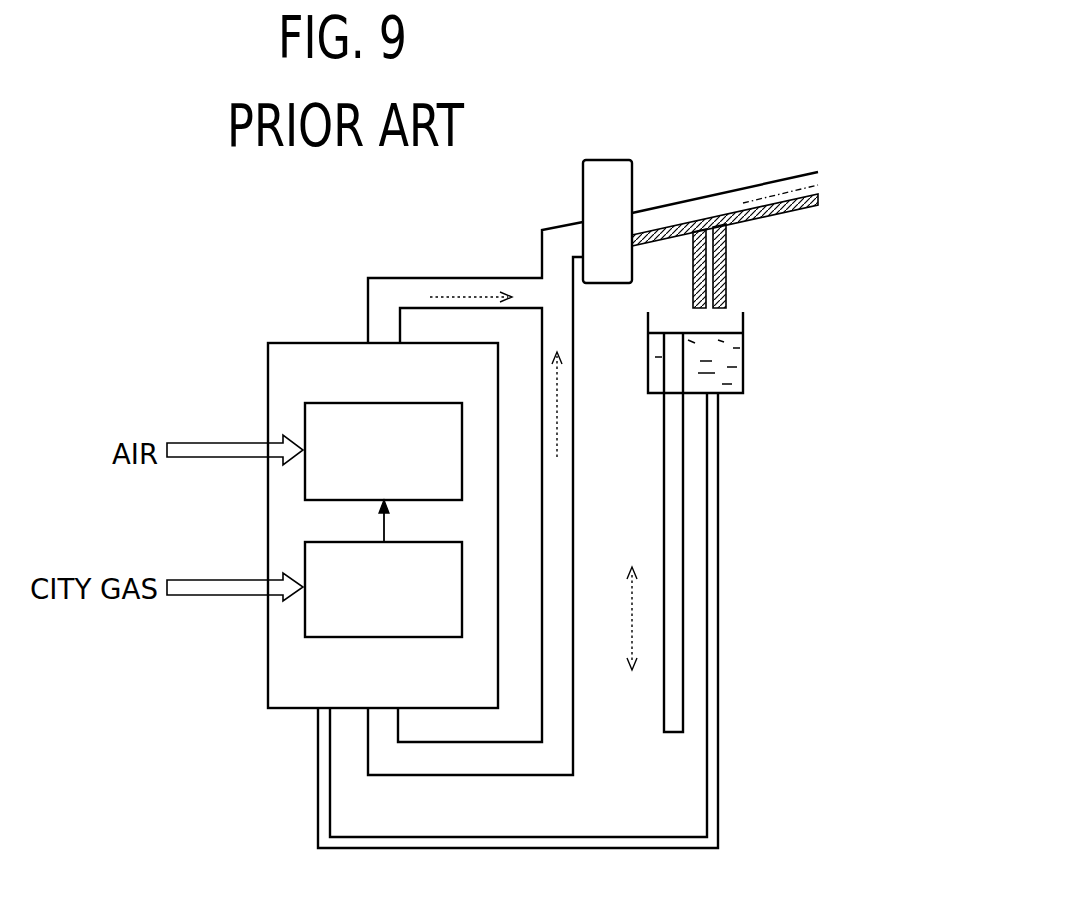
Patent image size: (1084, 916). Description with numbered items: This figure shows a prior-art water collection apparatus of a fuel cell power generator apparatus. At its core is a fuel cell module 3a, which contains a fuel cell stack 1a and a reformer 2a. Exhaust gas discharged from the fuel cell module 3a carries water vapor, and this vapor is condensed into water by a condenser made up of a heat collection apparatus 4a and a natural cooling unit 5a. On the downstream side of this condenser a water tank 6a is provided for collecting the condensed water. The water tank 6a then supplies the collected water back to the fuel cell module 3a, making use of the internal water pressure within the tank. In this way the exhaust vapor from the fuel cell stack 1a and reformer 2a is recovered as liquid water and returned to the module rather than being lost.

The fuel cell stack 1a is at (428, 403).
The reformer 2a is at (428, 637).
The fuel cell module 3a is at (290, 342).
The heat collection apparatus 4a is at (608, 158).
The natural cooling unit 5a is at (750, 182).
The water tank 6a is at (743, 338).